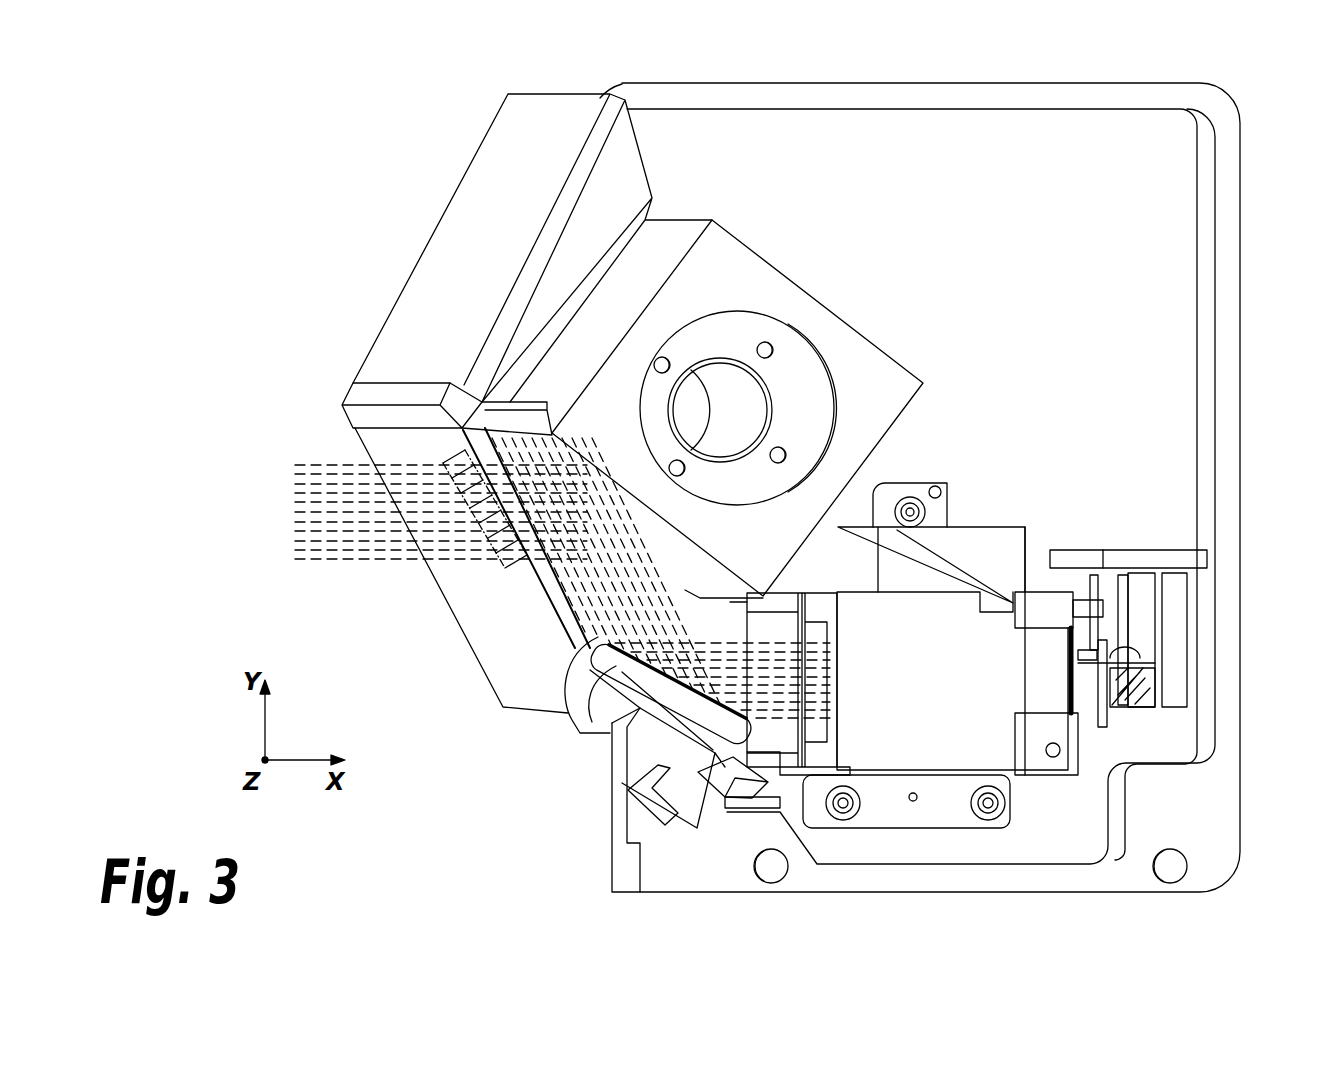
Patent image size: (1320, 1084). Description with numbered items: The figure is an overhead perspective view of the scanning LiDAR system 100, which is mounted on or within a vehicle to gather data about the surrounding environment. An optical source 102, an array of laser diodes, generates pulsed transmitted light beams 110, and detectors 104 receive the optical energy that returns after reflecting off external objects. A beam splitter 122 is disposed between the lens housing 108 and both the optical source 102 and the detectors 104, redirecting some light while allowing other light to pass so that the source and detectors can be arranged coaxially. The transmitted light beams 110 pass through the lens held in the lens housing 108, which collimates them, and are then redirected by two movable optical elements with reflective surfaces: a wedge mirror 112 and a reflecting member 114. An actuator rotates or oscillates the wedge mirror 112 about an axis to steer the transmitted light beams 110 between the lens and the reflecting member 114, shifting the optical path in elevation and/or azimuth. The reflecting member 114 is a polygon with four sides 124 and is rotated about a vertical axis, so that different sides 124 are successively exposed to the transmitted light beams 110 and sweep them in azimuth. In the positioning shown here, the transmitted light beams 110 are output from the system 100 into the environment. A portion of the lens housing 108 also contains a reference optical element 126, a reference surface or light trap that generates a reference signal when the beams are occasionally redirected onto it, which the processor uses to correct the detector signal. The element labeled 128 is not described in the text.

The scanning LiDAR system 100 is at (358, 158).
The optical source 102 is at (1140, 618).
The detectors 104 is at (1180, 657).
The lens housing 108 is at (963, 733).
The transmitted light beams 110 is at (375, 518).
The wedge mirror 112 is at (707, 735).
The reflecting member 114 is at (873, 378).
The beam splitter 122 is at (1130, 700).
The sides 124 is at (648, 263).
The reference optical element 126 is at (990, 548).
The prism plate 128 is at (500, 595).